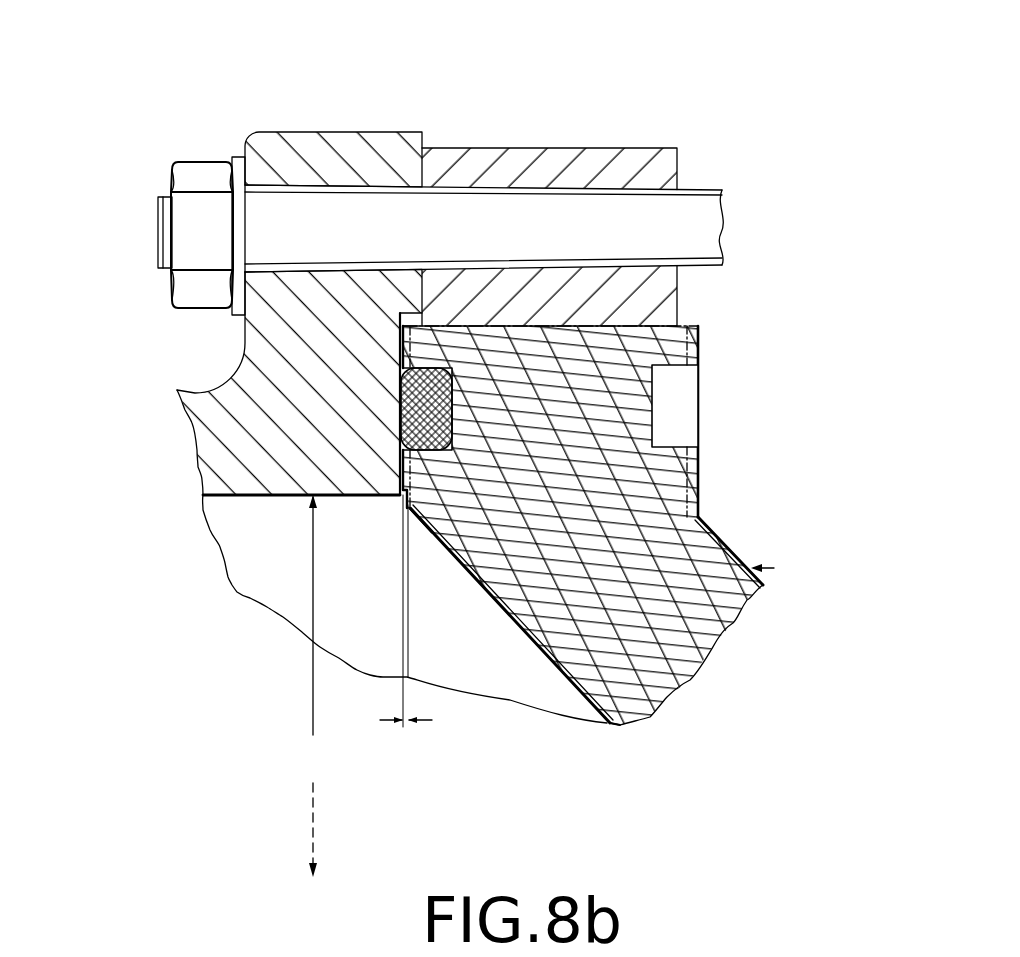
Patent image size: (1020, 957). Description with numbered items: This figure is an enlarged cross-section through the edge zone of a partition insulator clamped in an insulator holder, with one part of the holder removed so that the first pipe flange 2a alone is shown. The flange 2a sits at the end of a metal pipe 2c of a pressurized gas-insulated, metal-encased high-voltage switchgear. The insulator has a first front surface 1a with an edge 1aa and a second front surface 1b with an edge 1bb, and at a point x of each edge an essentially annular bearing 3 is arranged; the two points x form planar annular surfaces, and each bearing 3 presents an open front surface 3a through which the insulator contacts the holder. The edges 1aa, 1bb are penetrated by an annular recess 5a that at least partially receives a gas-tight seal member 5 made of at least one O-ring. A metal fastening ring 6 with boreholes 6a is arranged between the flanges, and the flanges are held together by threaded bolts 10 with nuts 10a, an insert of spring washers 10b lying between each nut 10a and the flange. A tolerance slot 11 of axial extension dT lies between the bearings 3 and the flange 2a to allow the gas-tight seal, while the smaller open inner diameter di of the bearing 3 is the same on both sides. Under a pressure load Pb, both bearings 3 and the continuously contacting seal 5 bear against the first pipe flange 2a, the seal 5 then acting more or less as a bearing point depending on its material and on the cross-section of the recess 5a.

The first front surface 1a is at (763, 585).
The edge of the first front surface 1aa is at (703, 507).
The second front surface 1b is at (577, 690).
The edge of the second front surface 1bb is at (430, 530).
The first pipe flange 2a is at (358, 415).
The metal pipe 2c is at (233, 472).
The bearing 3 is at (410, 353).
The open front surface 3a is at (400, 331).
The gas-tight seal member 5 is at (423, 427).
The annular recess 5a is at (672, 402).
The fastening ring 6 is at (650, 172).
The boreholes 6a is at (577, 190).
The threaded bolt 10 is at (298, 218).
The nut 10a is at (187, 178).
The spring washer 10b is at (237, 175).
The tolerance slot 11 is at (397, 358).
The point x is at (424, 318).
The pressure load Pb is at (776, 576).
The open inner diameter di is at (309, 686).
The axial extension of the tolerance slot dT is at (406, 746).